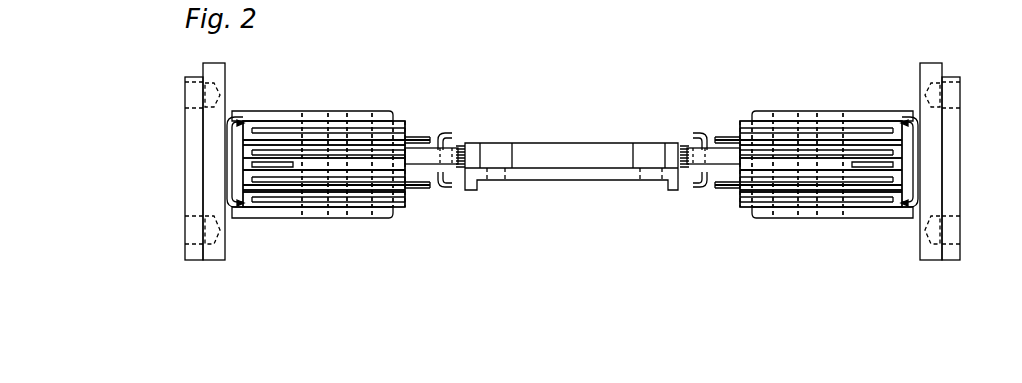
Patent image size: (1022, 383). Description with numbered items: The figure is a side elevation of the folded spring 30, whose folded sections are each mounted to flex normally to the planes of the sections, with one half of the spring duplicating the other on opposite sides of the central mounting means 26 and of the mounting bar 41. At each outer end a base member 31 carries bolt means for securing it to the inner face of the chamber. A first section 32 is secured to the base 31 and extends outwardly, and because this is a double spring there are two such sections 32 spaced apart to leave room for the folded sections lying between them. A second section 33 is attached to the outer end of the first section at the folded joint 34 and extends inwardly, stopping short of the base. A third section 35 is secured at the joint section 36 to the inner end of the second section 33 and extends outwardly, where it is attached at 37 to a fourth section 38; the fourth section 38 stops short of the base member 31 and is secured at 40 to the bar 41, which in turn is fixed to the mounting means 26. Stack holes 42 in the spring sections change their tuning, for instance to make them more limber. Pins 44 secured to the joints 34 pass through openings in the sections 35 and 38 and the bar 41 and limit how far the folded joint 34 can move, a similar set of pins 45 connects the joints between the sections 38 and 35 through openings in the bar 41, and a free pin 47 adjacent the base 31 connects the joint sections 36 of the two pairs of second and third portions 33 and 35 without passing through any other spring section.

The mounting means 26 is at (548, 155).
The spring 30 is at (365, 112).
The base member 31 is at (198, 131).
The first section 32 is at (291, 111).
The second section 33 is at (318, 128).
The joint 34 is at (392, 122).
The third section 35 is at (346, 133).
The joint section 36 is at (238, 118).
The attachment point 37 is at (433, 140).
The fourth section 38 is at (363, 157).
The securing point 40 is at (252, 163).
The bar 41 is at (413, 166).
The stack hole 42 is at (283, 110).
The pin 44 is at (399, 127).
The pin 45 is at (458, 170).
The pin 47 is at (250, 152).